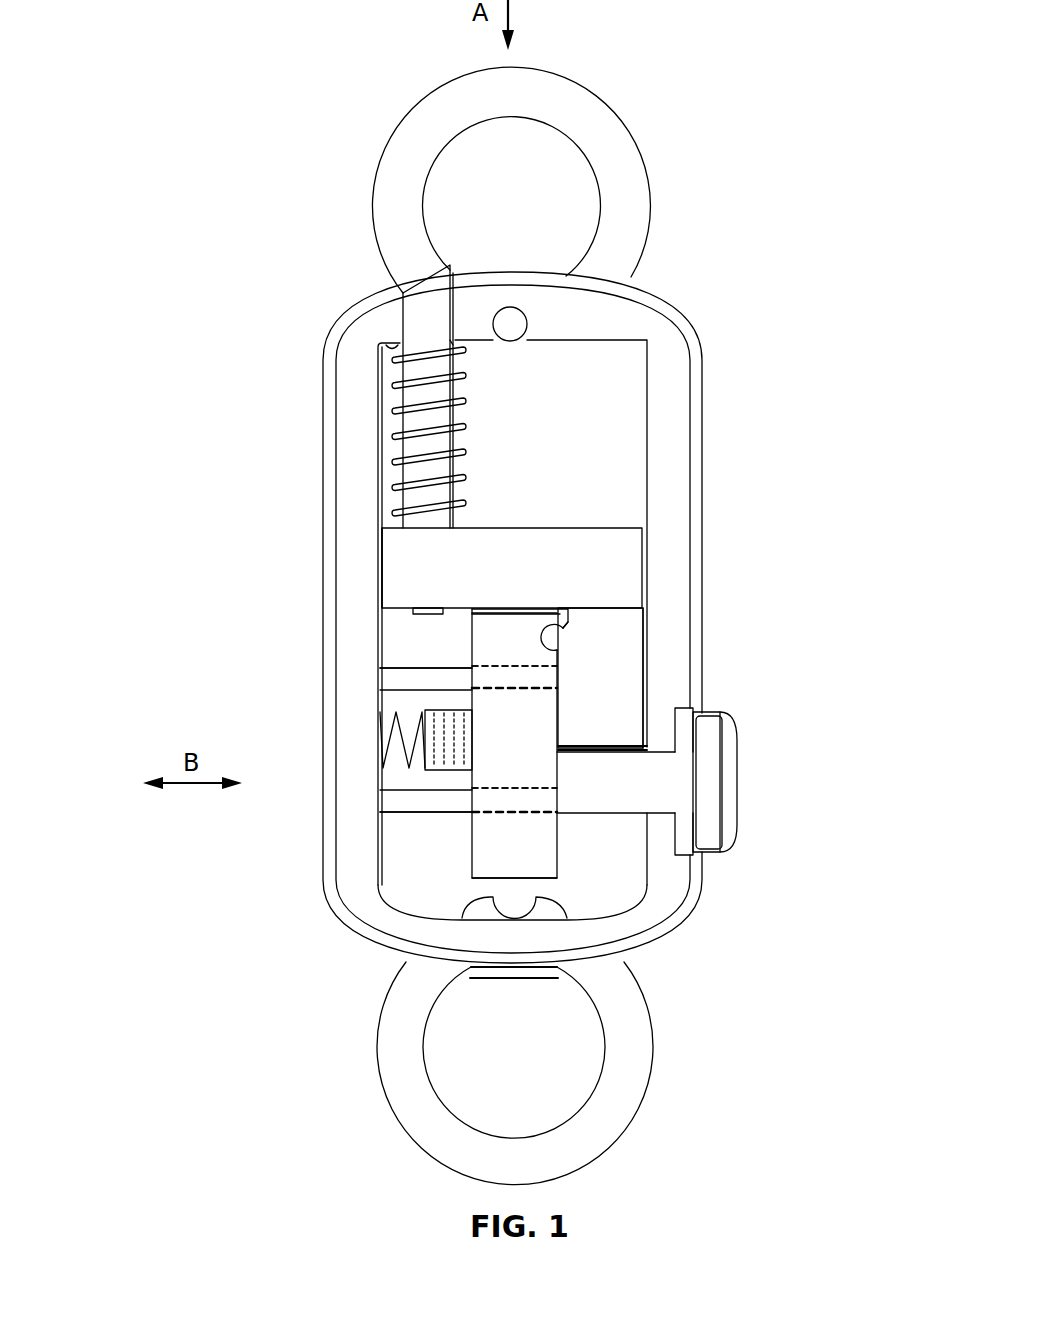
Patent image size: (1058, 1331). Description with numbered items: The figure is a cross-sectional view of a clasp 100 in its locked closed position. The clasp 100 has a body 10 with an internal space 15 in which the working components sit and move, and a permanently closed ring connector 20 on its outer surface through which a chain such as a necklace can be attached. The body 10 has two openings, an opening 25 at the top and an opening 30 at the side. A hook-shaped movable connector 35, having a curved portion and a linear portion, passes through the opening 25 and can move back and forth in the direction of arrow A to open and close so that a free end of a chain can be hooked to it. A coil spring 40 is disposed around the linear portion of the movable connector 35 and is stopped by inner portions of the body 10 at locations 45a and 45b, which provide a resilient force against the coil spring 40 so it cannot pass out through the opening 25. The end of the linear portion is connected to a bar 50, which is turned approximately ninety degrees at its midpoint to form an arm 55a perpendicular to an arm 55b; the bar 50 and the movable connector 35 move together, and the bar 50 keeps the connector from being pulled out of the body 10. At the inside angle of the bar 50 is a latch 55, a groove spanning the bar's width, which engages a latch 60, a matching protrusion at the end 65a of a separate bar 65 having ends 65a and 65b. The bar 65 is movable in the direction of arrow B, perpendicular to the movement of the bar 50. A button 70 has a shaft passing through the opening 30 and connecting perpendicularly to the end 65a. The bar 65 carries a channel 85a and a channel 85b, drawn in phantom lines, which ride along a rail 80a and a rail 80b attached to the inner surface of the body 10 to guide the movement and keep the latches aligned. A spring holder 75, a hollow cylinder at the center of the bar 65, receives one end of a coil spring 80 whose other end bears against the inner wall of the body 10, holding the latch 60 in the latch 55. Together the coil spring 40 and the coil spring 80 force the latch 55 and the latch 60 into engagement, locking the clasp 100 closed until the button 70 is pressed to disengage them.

The clasp 100 is at (224, 57).
The body 10 is at (702, 455).
The internal space 15 is at (623, 427).
The connector 20 is at (643, 1103).
The opening 25 is at (398, 293).
The opening 30 is at (657, 753).
The movable connector 35 is at (623, 157).
The coil spring 40 is at (393, 480).
The location of inner portion of body 45a is at (457, 345).
The location of inner portion of body 45b is at (390, 347).
The bar 50 is at (545, 538).
The latch 55 is at (572, 617).
The arm 55a is at (390, 567).
The arm 55b is at (627, 720).
The latch 60 is at (560, 652).
The bar 65 is at (510, 733).
The end of bar 65 65a is at (495, 630).
The end of bar 65 65b is at (540, 857).
The button 70 is at (737, 808).
The spring holder 75 is at (450, 773).
The coil spring 80 is at (383, 723).
The rail 80a is at (388, 680).
The rail 80b is at (413, 803).
The channel 85a is at (502, 677).
The channel 85b is at (493, 803).